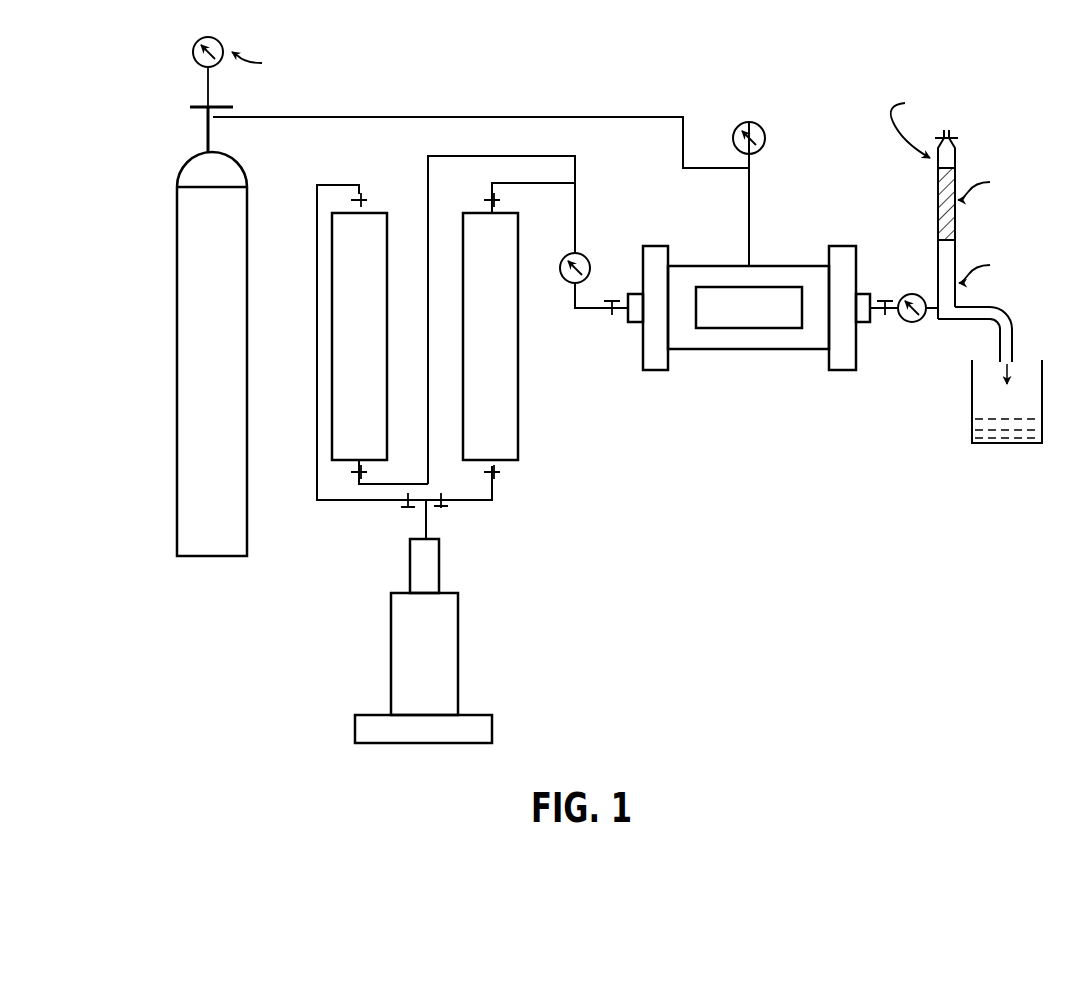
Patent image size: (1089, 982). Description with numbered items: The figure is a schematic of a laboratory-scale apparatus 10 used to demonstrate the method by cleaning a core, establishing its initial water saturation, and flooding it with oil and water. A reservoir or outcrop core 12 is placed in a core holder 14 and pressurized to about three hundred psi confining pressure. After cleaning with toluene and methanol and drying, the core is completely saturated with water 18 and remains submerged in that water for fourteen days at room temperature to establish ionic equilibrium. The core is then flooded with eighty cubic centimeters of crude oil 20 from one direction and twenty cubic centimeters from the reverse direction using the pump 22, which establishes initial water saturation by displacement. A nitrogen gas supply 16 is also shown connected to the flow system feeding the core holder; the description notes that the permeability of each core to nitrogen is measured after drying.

The apparatus 10 is at (728, 570).
The core 12 is at (838, 222).
The core holder 14 is at (768, 408).
The nitrogen gas cylinder 16 is at (224, 562).
The water 18 is at (388, 393).
The crude oil 20 is at (518, 365).
The pump 22 is at (441, 669).